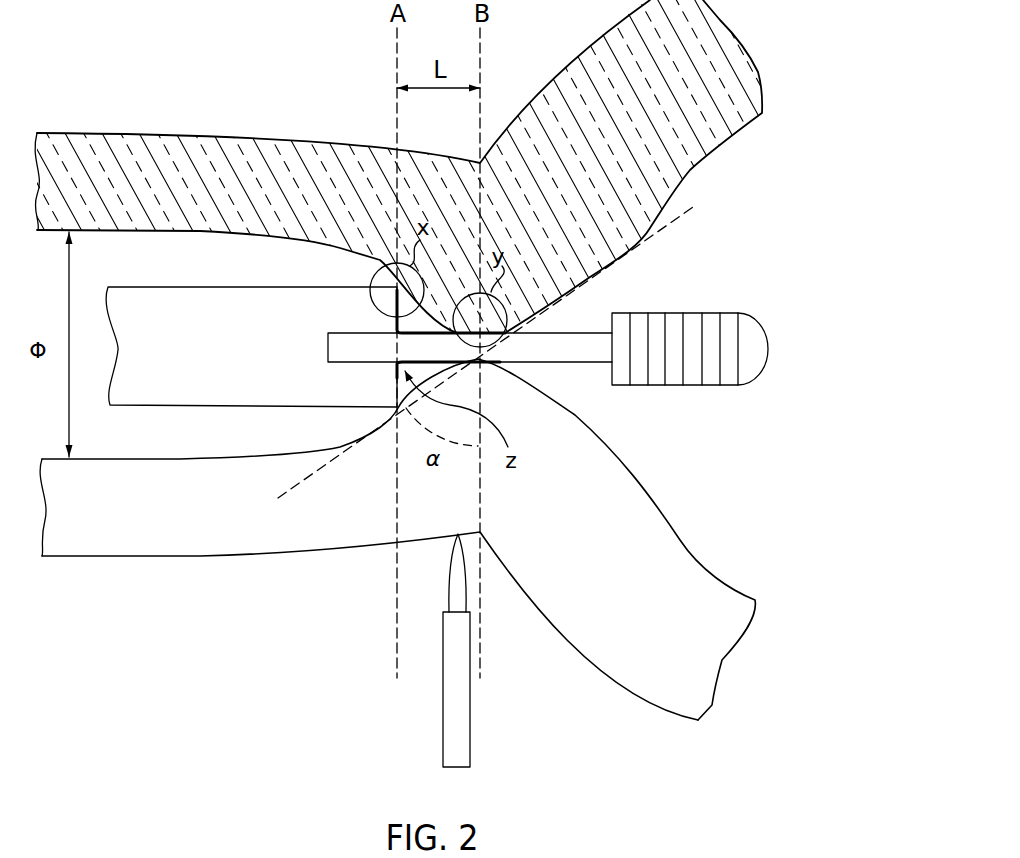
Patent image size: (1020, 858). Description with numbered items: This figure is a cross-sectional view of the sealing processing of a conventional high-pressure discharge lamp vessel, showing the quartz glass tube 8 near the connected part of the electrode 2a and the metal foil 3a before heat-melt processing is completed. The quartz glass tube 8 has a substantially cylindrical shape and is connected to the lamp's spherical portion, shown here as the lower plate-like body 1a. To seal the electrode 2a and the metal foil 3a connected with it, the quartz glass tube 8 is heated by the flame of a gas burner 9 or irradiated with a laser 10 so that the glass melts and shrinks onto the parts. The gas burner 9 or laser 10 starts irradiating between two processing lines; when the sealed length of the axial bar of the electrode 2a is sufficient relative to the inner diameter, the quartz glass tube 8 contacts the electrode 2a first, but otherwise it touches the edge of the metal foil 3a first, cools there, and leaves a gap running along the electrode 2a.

The first member (lower plate) joint portion 1a is at (788, 522).
The electrode 2a is at (703, 302).
The metal foil 3a is at (195, 305).
The quartz glass tube 8 is at (234, 160).
The gas burner 9 is at (493, 651).
The laser 10 is at (493, 651).